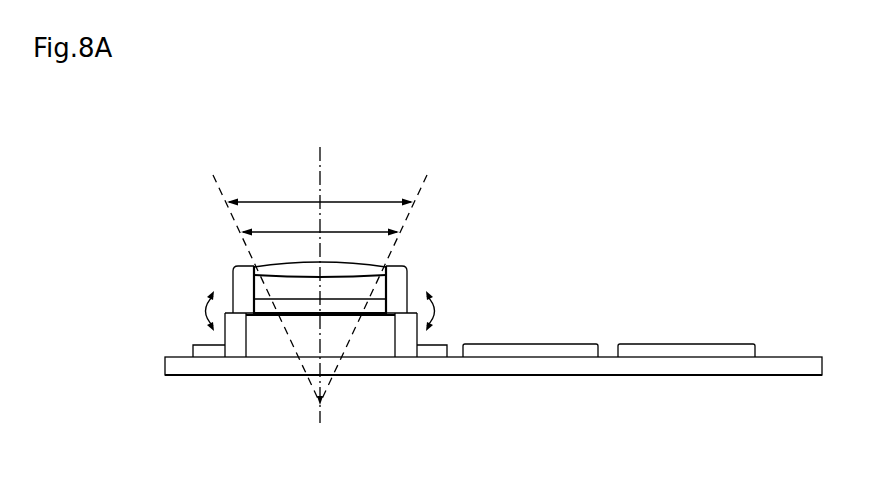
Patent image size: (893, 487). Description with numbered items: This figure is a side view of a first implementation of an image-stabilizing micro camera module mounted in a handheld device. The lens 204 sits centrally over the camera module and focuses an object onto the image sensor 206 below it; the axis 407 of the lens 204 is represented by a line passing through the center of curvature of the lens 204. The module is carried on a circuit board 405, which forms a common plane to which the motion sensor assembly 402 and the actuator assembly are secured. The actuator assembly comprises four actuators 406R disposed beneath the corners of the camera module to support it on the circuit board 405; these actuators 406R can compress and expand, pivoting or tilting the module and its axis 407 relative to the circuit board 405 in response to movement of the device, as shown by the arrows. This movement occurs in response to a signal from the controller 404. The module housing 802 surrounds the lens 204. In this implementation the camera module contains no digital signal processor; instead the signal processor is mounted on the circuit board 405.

The lens 204 is at (267, 268).
The image sensor 206 is at (372, 316).
The motion sensor assembly 402 is at (687, 343).
The controller 404 is at (532, 343).
The circuit board 405 is at (785, 353).
The actuators 406R is at (245, 329).
The axis 407 is at (320, 161).
The lens holder housing 802 is at (408, 277).